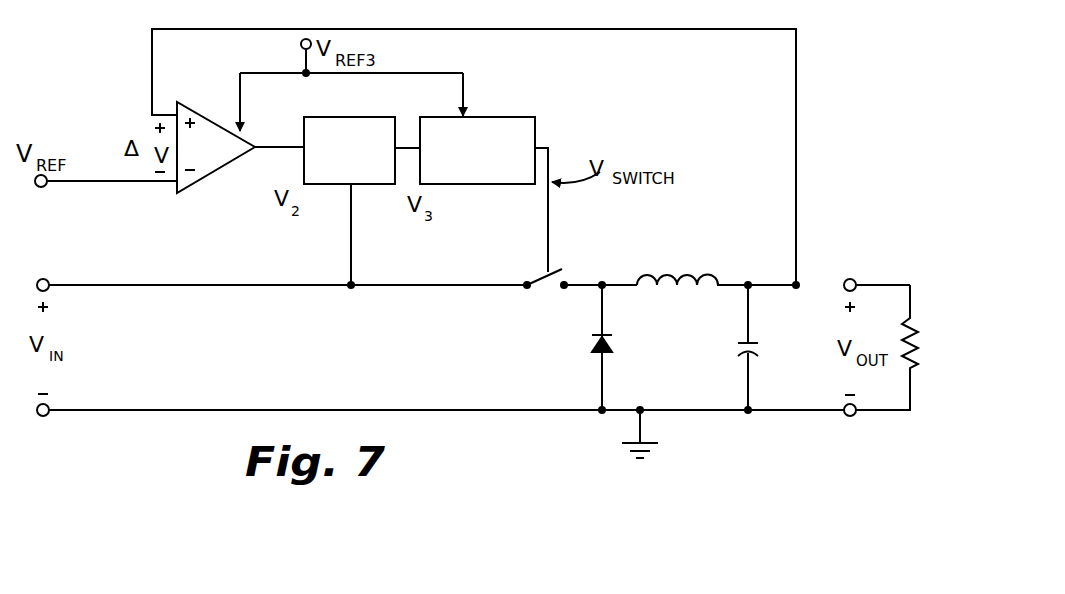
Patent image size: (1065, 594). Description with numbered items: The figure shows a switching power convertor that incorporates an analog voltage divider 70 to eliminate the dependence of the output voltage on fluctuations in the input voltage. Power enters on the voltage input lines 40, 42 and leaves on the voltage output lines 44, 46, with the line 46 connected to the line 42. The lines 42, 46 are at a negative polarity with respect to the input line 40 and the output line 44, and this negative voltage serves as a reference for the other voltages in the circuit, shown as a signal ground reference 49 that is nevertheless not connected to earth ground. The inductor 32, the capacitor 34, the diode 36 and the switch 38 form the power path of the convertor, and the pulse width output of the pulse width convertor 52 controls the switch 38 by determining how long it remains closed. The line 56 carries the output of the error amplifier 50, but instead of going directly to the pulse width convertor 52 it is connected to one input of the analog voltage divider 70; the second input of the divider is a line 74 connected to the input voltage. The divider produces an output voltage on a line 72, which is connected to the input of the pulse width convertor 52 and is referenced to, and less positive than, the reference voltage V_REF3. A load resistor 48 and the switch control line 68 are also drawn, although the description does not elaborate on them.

The error amplifier 50 is at (210, 118).
The line 56 is at (278, 180).
The analog voltage divider 70 is at (356, 116).
The line 72 is at (402, 145).
The pulse width convertor 52 is at (497, 116).
The switch control line (V switch) 68 is at (548, 147).
The line 74 is at (355, 242).
The input line 40 is at (130, 286).
The input line 42 is at (150, 410).
The switch 38 is at (551, 283).
The inductor 32 is at (680, 273).
The diode 36 is at (592, 345).
The capacitor 34 is at (738, 345).
The output line 44 is at (823, 285).
The output line 46 is at (800, 411).
The load resistor 48 is at (913, 318).
The signal ground reference 49 is at (637, 427).